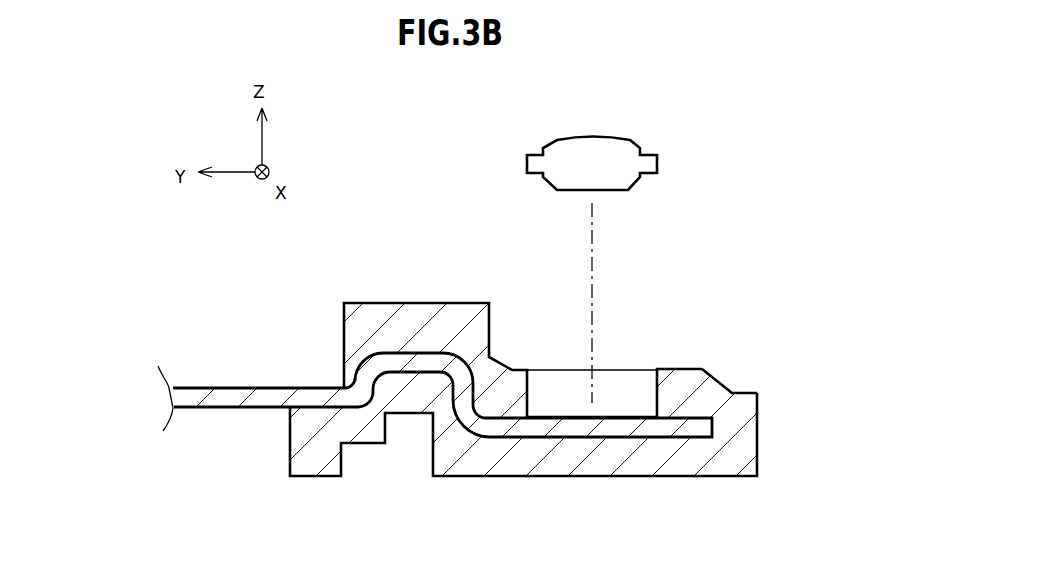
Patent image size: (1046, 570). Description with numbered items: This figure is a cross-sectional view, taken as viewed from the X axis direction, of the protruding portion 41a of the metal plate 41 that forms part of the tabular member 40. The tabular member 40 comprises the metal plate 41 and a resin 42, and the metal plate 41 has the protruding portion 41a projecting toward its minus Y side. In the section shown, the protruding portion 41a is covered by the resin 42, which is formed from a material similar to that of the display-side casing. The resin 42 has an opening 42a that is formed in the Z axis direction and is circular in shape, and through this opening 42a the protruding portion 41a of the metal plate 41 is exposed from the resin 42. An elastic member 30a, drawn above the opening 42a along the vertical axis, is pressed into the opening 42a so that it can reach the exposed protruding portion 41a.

The elastic member 30a is at (553, 140).
The tabular member 40 is at (752, 238).
The metal plate 41 is at (242, 388).
The protruding portion 41a is at (666, 423).
The resin 42 is at (718, 378).
The opening 42a is at (647, 378).